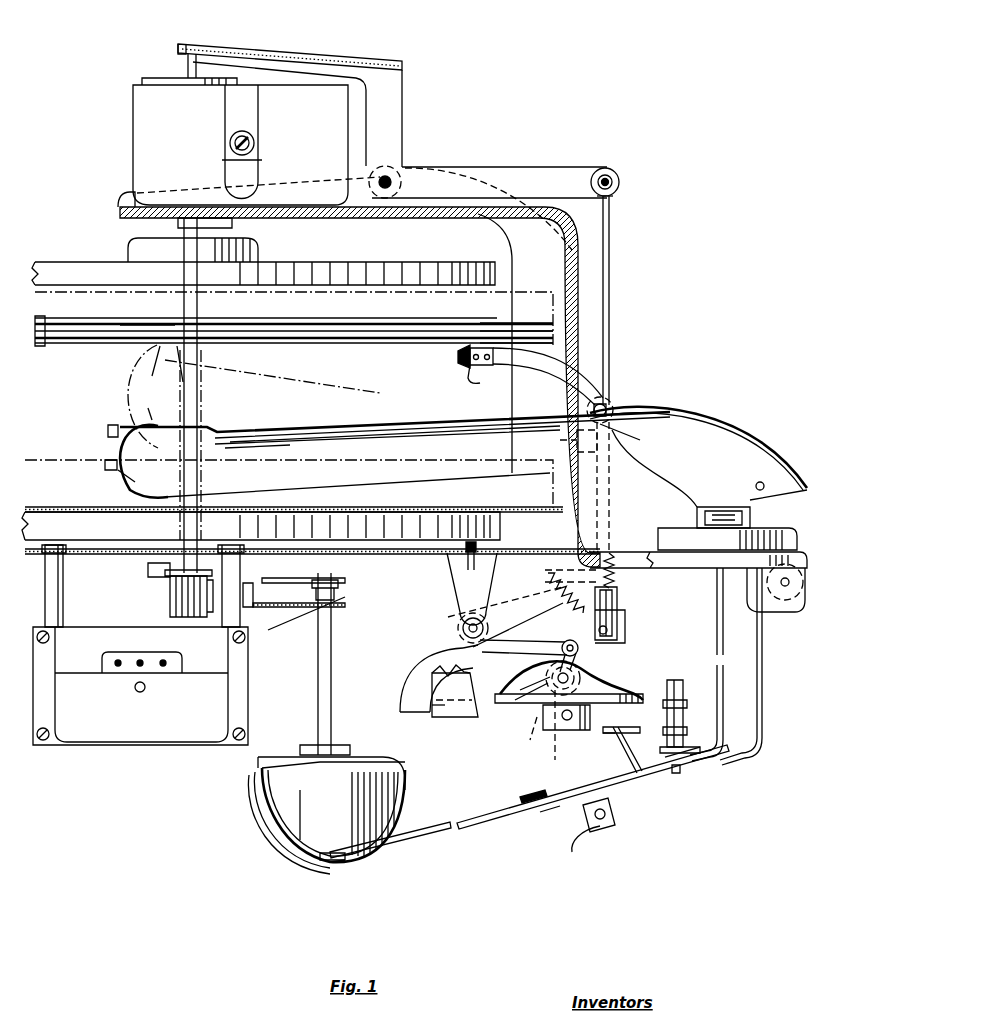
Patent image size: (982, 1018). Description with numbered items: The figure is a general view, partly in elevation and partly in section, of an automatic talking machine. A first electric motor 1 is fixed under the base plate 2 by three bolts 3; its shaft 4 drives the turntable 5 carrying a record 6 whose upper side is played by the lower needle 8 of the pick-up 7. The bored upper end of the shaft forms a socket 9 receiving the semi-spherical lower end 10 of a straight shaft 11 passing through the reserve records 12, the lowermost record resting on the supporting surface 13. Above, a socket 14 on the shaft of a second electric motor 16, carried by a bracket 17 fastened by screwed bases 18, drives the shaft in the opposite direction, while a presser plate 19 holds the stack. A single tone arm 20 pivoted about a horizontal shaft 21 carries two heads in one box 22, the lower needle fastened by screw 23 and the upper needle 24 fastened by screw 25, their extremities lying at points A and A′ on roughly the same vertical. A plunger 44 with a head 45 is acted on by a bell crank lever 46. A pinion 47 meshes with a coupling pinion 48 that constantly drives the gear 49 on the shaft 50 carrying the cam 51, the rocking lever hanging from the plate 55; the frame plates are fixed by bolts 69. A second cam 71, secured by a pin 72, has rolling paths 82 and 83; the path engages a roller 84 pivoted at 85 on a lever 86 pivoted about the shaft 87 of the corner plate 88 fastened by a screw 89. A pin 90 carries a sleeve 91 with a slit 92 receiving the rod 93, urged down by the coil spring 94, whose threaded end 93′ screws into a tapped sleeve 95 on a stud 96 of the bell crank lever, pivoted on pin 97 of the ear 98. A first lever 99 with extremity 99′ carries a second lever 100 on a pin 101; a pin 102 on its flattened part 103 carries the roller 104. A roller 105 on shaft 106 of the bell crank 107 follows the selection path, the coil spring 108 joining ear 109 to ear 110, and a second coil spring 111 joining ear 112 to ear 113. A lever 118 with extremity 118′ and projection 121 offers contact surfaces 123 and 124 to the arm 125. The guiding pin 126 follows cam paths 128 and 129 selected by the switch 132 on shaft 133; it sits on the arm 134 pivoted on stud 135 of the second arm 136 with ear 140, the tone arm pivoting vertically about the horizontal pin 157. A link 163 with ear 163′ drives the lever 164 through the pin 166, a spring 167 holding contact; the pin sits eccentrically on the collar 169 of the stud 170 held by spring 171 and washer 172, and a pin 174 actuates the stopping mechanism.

The first electric motor 1 is at (107, 727).
The base plate 2 is at (120, 562).
The bolts 3 is at (53, 612).
The shaft 4 is at (173, 575).
The turntable 5 is at (67, 508).
The record 6 is at (95, 526).
The pick-up 7 is at (260, 449).
The lower needle 8 is at (128, 466).
The socket 9 is at (253, 447).
The semi-spherical lower end 10 is at (220, 433).
The straight shaft 11 is at (200, 392).
The records 12 is at (80, 327).
The supporting surface 13 is at (180, 346).
The socket 14 is at (147, 206).
The second electric motor 16 is at (150, 131).
The bracket 17 is at (187, 222).
The screwed bases 18 is at (610, 550).
The presser plate 19 is at (118, 270).
The tone arm 20 is at (437, 443).
The horizontal shaft 21 is at (785, 586).
The box 22 is at (147, 447).
The screw 23 is at (106, 462).
The upper needle 24 is at (150, 409).
The screw 25 is at (110, 428).
The plunger 44 is at (187, 70).
The head 45 is at (183, 49).
The bell crank lever 46 is at (265, 51).
The toothed pinion 47 is at (173, 603).
The coupling pinion 48 is at (277, 582).
The toothed gear 49 is at (292, 606).
The shaft 50 is at (322, 723).
The cam 51 is at (370, 800).
The plate 55 is at (336, 613).
The bolts 69 is at (315, 607).
The second cam 71 is at (657, 692).
The pin 72 is at (565, 730).
The rolling path 82 is at (552, 703).
The rolling path 83 is at (548, 680).
The roller 84 is at (537, 717).
The pivot 85 is at (553, 678).
The lever 86 is at (620, 643).
The shaft 87 is at (457, 622).
The corner plate 88 is at (457, 592).
The screw 89 is at (471, 547).
The pin 90 is at (612, 630).
The sleeve 91 is at (613, 593).
The slit 92 is at (620, 612).
The rod 93 is at (608, 281).
The screw-threaded upper end 93′ is at (612, 203).
The coil spring 94 is at (612, 573).
The tapped sleeve 95 is at (615, 180).
The stud 96 is at (607, 178).
The pin 97 is at (390, 177).
The ear 98 is at (373, 202).
The first lever 99 is at (430, 640).
The extremity 99′ is at (413, 695).
The second lever 100 is at (537, 373).
The pin 101 is at (613, 407).
The pin 102 is at (455, 353).
The flattened part 103 is at (490, 366).
The roller 104 is at (465, 364).
The roller 105 is at (580, 657).
The shaft 106 is at (578, 650).
The bell crank 107 is at (530, 627).
The coil spring 108 is at (545, 590).
The ear 109 is at (560, 570).
The ear 110 is at (527, 658).
The second coil spring 111 is at (640, 413).
The ear 112 is at (672, 412).
The ear 113 is at (570, 448).
The lever 118 is at (468, 690).
The extremity 118′ is at (448, 706).
The projection 121 is at (477, 715).
The contact surface 123 is at (620, 727).
The contact surface 124 is at (603, 731).
The arm 125 is at (630, 753).
The guiding pin 126 is at (335, 856).
The cam path 128 is at (353, 763).
The cam path 129 is at (320, 856).
The switch 132 is at (260, 787).
The shaft 133 is at (273, 817).
The arm 134 is at (420, 837).
The stud 135 is at (533, 795).
The second arm 136 is at (558, 810).
The ear 140 is at (762, 608).
The horizontal pin 157 is at (762, 483).
The link 163 is at (575, 795).
The ear 163′ is at (613, 815).
The lever 164 is at (727, 680).
The pin 166 is at (677, 757).
The spring 167 is at (578, 848).
The collar 169 is at (677, 767).
The stud 170 is at (677, 710).
The spring 171 is at (683, 747).
The washer 172 is at (683, 730).
The pin 174 is at (677, 693).
The point A is at (160, 503).
The point A′ is at (148, 330).